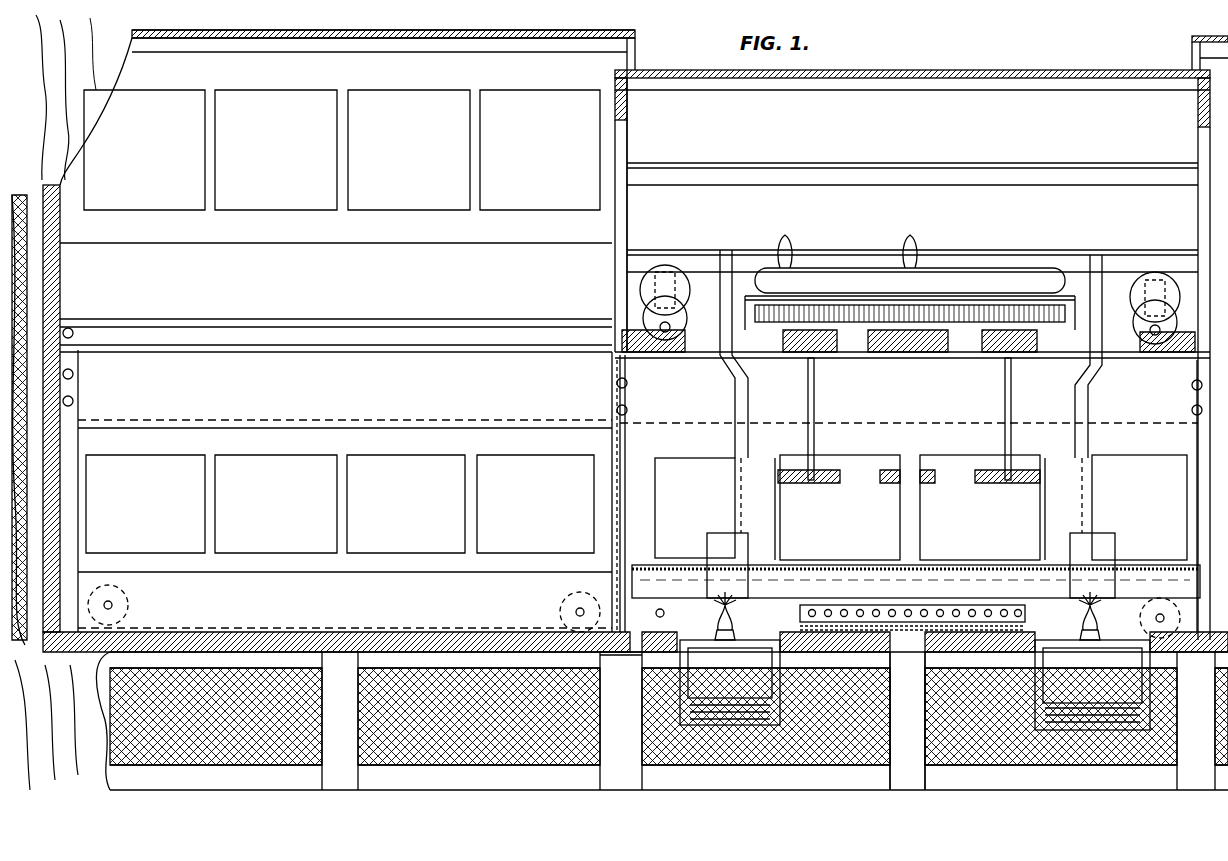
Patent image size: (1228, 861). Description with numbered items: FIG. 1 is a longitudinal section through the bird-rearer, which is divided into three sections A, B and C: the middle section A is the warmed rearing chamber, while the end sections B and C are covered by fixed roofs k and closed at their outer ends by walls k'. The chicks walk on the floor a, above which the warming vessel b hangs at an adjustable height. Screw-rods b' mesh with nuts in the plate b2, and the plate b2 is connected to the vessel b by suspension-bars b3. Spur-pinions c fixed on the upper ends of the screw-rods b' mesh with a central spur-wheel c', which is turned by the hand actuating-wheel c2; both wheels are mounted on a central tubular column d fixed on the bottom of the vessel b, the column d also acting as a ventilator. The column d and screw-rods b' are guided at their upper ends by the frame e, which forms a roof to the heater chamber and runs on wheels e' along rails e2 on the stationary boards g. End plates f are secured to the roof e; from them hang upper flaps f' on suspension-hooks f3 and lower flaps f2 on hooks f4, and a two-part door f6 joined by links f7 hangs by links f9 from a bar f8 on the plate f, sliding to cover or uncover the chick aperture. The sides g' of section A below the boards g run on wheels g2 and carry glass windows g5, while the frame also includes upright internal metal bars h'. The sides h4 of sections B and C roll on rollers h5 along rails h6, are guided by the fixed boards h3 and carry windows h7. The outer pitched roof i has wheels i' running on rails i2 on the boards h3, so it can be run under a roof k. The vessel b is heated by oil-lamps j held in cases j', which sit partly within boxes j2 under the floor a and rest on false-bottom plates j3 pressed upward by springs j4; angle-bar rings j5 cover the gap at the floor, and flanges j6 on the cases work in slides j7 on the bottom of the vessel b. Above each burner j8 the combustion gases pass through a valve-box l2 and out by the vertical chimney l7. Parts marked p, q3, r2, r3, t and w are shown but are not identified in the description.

The section A is at (910, 810).
The section B is at (347, 322).
The section C is at (1210, 37).
The floor a is at (180, 640).
The warming vessel b is at (916, 562).
The screw-rods b' is at (909, 419).
The plate b2 is at (845, 480).
The suspension-bars b3 is at (785, 520).
The spur-pinions c is at (910, 340).
The central operating spur-wheel c' is at (910, 303).
The hand actuating-wheel c2 is at (1068, 250).
The central tubular column d is at (915, 258).
The frame or roof e is at (917, 368).
The wheels e' is at (902, 317).
The rails e2 is at (105, 350).
The end plates f is at (888, 493).
The upper flap f' is at (874, 510).
The lower flap f2 is at (911, 666).
The suspension-hooks f3 is at (1195, 470).
The hooks f4 is at (612, 604).
The door f6 is at (1195, 555).
The links f7 is at (612, 585).
The bar f8 is at (565, 483).
The links f9 is at (569, 508).
The longitudinal boards g is at (613, 406).
The sliding sides g' is at (906, 448).
The wheels g2 is at (1100, 625).
The glass windows g5 is at (675, 440).
The upright internal metal bars h' is at (615, 459).
The frame-boards h3 is at (385, 335).
The movable sides h4 is at (329, 488).
The rollers h5 is at (120, 603).
The rails h6 is at (360, 635).
The glass windows h7 is at (530, 470).
The outer pitched roof i is at (914, 165).
The wheels i' is at (910, 280).
The rails i2 is at (1122, 330).
The oil-lamps j is at (915, 685).
The lamp-cases j' is at (921, 526).
The boxes j2 is at (1190, 712).
The false bottoms or plates j3 is at (790, 680).
The springs j4 is at (1190, 690).
The angle-bar rings j5 is at (912, 668).
The flanges j6 is at (1117, 618).
The slides j7 is at (675, 614).
The burner j8 is at (752, 610).
The fixed roof k is at (663, 32).
The wall k' is at (78, 408).
The valve-box l2 is at (712, 545).
The chimney l7 is at (725, 262).
The perforated pipe p is at (990, 612).
The pipe q3 is at (858, 640).
The pit wall r2 is at (926, 660).
The pipe r3 is at (822, 610).
The pit t is at (907, 721).
The water w is at (935, 610).